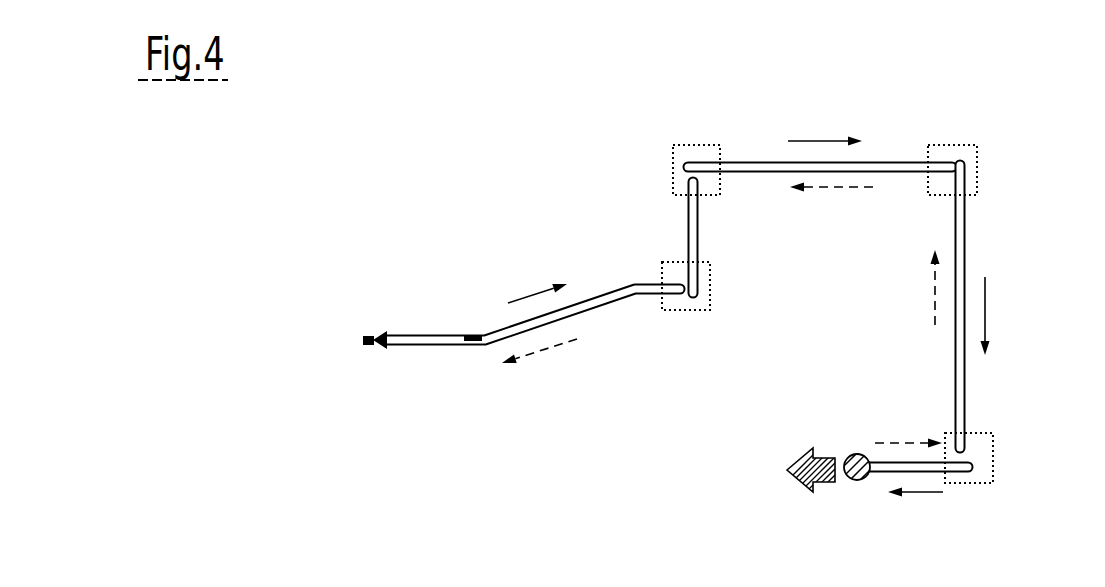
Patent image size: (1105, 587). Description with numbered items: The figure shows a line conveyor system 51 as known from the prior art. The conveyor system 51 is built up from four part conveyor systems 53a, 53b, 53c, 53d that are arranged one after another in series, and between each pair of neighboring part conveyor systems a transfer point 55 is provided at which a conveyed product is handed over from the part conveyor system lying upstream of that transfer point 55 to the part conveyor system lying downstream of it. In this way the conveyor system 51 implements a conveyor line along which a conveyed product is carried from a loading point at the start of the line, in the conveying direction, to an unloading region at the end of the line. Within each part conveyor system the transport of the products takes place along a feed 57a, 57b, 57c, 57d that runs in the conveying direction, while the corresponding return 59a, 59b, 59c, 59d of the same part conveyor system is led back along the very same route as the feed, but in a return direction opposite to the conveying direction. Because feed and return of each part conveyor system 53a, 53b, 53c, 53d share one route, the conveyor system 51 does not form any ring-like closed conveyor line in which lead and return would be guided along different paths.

The conveyor system 51 is at (435, 181).
The part conveyor system 53a is at (547, 256).
The part conveyor system 53b is at (892, 131).
The part conveyor system 53c is at (992, 236).
The part conveyor system 53d is at (846, 399).
The transfer point 55 is at (693, 145).
The feed 57a is at (595, 293).
The feed 57b is at (747, 160).
The feed 57c is at (967, 413).
The feed 57d is at (880, 477).
The return 59a is at (607, 305).
The return 59b is at (733, 173).
The return 59c is at (955, 367).
The return 59d is at (875, 460).